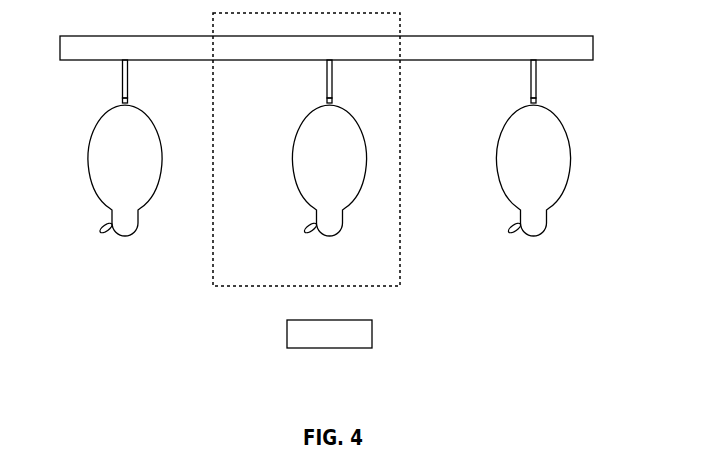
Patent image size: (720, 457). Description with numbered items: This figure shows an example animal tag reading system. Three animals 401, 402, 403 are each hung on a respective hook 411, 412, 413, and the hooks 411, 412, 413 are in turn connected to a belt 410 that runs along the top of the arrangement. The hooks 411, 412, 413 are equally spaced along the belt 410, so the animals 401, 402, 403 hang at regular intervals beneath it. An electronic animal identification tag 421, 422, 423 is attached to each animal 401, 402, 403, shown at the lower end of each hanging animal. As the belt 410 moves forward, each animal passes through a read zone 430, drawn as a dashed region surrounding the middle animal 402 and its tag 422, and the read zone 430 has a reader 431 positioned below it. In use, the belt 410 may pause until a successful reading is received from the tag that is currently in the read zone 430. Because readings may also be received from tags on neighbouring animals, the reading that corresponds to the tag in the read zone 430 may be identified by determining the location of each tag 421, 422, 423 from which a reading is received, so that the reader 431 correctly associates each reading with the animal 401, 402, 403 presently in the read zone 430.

The belt 410 is at (593, 48).
The hook 411 is at (122, 78).
The hook 412 is at (327, 78).
The hook 413 is at (531, 78).
The animal 401 is at (89, 152).
The animal 402 is at (294, 152).
The animal 403 is at (498, 152).
The electronic animal identification tag 421 is at (100, 229).
The electronic animal identification tag 422 is at (305, 229).
The electronic animal identification tag 423 is at (509, 229).
The read zone 430 is at (235, 286).
The reader 431 is at (372, 333).